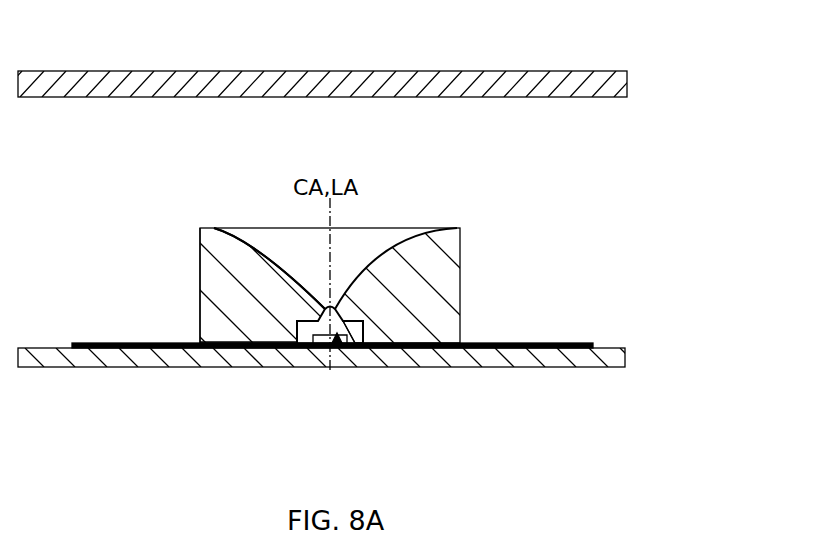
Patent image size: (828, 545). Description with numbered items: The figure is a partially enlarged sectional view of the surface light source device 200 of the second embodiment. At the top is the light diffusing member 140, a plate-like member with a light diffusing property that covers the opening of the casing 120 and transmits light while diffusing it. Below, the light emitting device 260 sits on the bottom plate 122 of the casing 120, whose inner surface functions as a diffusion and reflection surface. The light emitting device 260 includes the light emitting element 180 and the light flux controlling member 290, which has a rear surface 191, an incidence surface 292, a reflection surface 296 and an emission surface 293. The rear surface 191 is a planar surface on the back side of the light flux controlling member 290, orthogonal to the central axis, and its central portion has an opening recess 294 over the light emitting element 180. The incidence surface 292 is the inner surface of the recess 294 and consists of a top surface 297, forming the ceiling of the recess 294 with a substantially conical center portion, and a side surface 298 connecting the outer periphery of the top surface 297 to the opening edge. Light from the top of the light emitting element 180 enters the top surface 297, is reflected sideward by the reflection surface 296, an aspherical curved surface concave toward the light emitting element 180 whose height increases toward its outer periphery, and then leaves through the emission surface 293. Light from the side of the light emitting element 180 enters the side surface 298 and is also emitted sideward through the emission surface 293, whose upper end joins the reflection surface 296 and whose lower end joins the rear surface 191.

The surface light source device 200 is at (683, 63).
The light diffusing member 140 is at (80, 78).
The light emitting device 260 is at (457, 173).
The light flux controlling member 290 is at (447, 253).
The reflection surface 296 is at (265, 250).
The emission surface 293 is at (200, 320).
The rear surface 191 is at (255, 343).
The light emitting element 180 is at (315, 345).
The recess 294 is at (333, 347).
The top surface 297 is at (360, 350).
The side surface 298 is at (367, 350).
The incidence surface 292 is at (455, 460).
The bottom plate 122 is at (463, 350).
The casing 120 is at (584, 357).